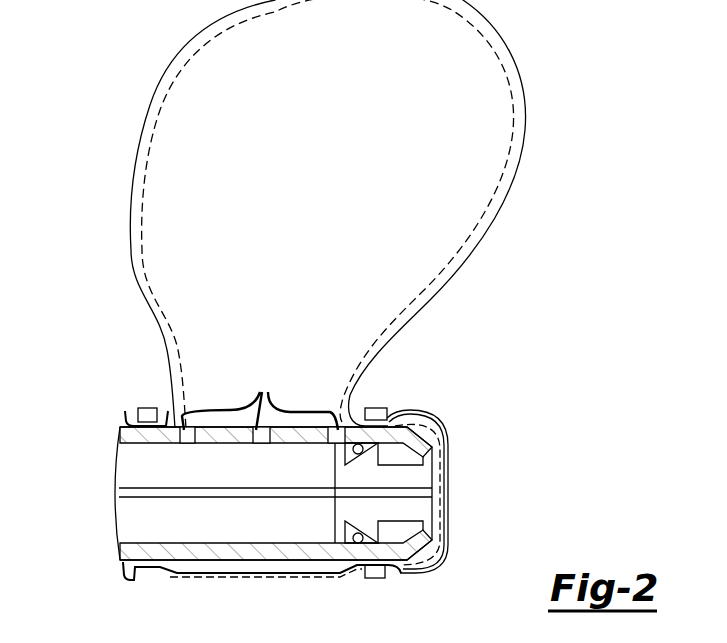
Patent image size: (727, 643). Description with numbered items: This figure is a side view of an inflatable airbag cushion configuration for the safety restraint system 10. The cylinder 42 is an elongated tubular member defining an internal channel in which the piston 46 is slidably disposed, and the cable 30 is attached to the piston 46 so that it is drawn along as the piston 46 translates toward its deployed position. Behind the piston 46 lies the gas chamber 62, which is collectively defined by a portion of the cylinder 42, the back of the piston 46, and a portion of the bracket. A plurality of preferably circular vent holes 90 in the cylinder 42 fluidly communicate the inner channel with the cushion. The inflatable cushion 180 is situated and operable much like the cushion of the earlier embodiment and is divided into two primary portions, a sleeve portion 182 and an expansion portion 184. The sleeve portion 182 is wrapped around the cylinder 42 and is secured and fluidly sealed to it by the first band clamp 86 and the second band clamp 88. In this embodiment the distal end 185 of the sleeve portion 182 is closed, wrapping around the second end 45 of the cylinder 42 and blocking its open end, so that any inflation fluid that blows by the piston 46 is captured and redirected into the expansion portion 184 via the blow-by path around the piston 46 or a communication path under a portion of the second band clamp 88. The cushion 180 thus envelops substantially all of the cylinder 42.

The safety restraint system 10 is at (552, 340).
The cable 30 is at (151, 499).
The tubular member 42 is at (262, 561).
The second end 45 is at (398, 574).
The piston 46 is at (333, 522).
The gas chamber 62 is at (150, 456).
The first band clamp 86 is at (148, 407).
The second band clamp 88 is at (383, 406).
The vent holes 90 is at (276, 411).
The inflatable cushion 180 is at (130, 156).
The sleeve portion 182 is at (322, 573).
The expansion portion 184 is at (503, 188).
The distal end 185 is at (449, 490).